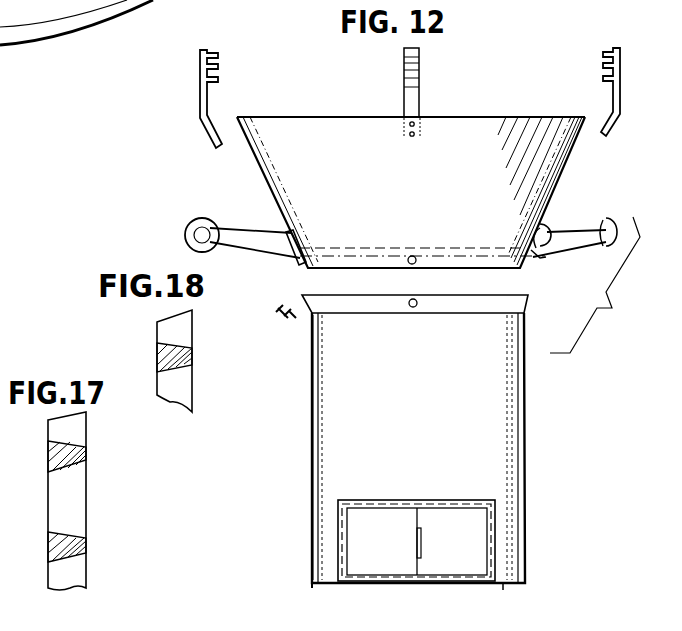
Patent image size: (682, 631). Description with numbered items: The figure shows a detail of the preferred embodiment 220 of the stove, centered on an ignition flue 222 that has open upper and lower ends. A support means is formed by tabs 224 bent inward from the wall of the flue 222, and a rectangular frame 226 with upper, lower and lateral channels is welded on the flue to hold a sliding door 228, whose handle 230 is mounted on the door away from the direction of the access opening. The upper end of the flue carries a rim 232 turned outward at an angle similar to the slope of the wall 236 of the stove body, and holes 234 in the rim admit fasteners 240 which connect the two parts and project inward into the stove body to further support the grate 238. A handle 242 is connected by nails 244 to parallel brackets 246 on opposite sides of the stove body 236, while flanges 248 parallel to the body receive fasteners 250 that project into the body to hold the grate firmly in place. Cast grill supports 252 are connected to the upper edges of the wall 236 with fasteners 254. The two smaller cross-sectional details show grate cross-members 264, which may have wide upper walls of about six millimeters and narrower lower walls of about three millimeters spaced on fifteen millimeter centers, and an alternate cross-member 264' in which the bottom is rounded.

In FIG. 12, the preferred embodiment 220 is at (556, 325).
In FIG. 12, the ignition flue 222 is at (526, 548).
In FIG. 12, the tabs 224 is at (502, 597).
In FIG. 12, the rectangular frame 226 is at (402, 498).
In FIG. 12, the sliding door 228 is at (358, 540).
In FIG. 12, the handle 230 is at (422, 548).
In FIG. 12, the rim 232 is at (311, 337).
In FIG. 12, the holes 234 is at (412, 310).
In FIG. 12, the wall of the stove body 236 is at (272, 162).
In FIG. 12, the grate 238 is at (302, 262).
In FIG. 12, the fasteners 240 is at (460, 247).
In FIG. 12, the handle 242 is at (608, 246).
In FIG. 12, the nails 244 is at (604, 220).
In FIG. 12, the parallel brackets 246 is at (572, 241).
In FIG. 12, the flanges 248 is at (538, 254).
In FIG. 12, the fasteners 250 is at (545, 222).
In FIG. 12, the cast grill supports 252 is at (617, 70).
In FIG. 12, the fasteners 254 is at (402, 123).
In FIG. 17, the cross-members 264 is at (96, 501).
In FIG. 18, the cross-members 264' is at (141, 361).